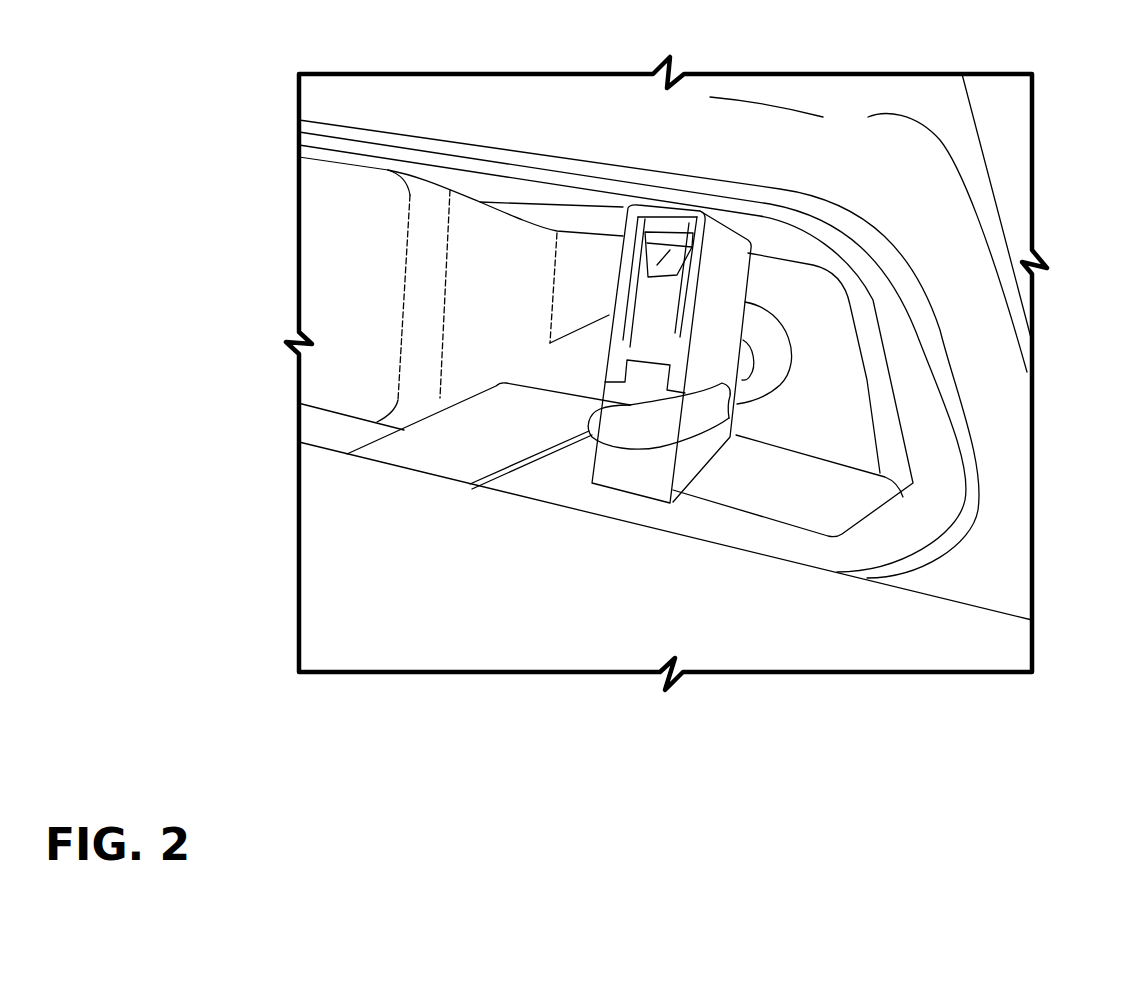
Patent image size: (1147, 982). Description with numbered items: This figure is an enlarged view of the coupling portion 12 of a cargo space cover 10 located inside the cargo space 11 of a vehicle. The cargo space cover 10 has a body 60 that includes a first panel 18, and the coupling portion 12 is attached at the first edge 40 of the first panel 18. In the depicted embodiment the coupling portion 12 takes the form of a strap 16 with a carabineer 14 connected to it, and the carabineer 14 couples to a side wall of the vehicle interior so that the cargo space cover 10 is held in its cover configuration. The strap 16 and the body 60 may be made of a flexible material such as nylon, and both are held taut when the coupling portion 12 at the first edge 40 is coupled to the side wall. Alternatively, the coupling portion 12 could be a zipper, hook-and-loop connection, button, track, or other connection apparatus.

The cargo space cover 10 is at (580, 685).
The cargo space 11 is at (878, 165).
The coupling portion 12 is at (495, 385).
The carabineer 14 is at (760, 372).
The strap 16 is at (452, 442).
The first panel 18 is at (488, 602).
The first edge 40 is at (967, 603).
The body 60 is at (763, 610).